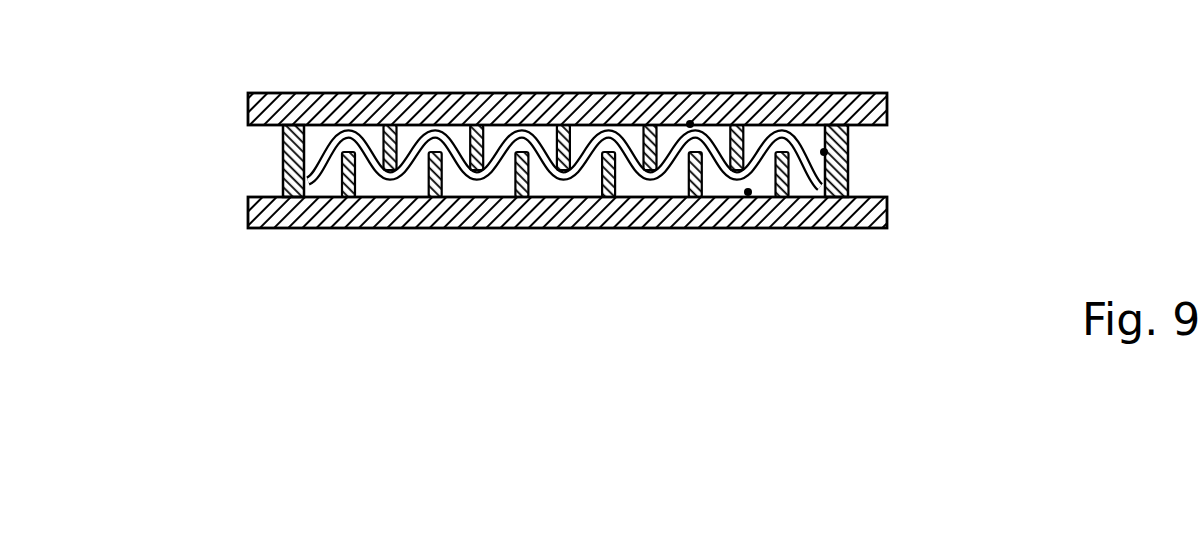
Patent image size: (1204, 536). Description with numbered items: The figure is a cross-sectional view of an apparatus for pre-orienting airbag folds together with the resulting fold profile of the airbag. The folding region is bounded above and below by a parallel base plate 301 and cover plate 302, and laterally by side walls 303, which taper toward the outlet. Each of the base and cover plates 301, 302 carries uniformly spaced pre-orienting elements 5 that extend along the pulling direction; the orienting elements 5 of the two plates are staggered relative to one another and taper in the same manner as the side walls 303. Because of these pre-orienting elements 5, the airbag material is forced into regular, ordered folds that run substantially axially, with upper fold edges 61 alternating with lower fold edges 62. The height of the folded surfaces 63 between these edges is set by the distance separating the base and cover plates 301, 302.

The pre-orienting element 5 is at (412, 128).
The base plate 301 is at (513, 212).
The cover plate 302 is at (532, 93).
The side wall 303 is at (283, 162).
The upper fold edge 61 is at (691, 122).
The lower fold edge 62 is at (749, 194).
The folded surface 63 is at (848, 150).